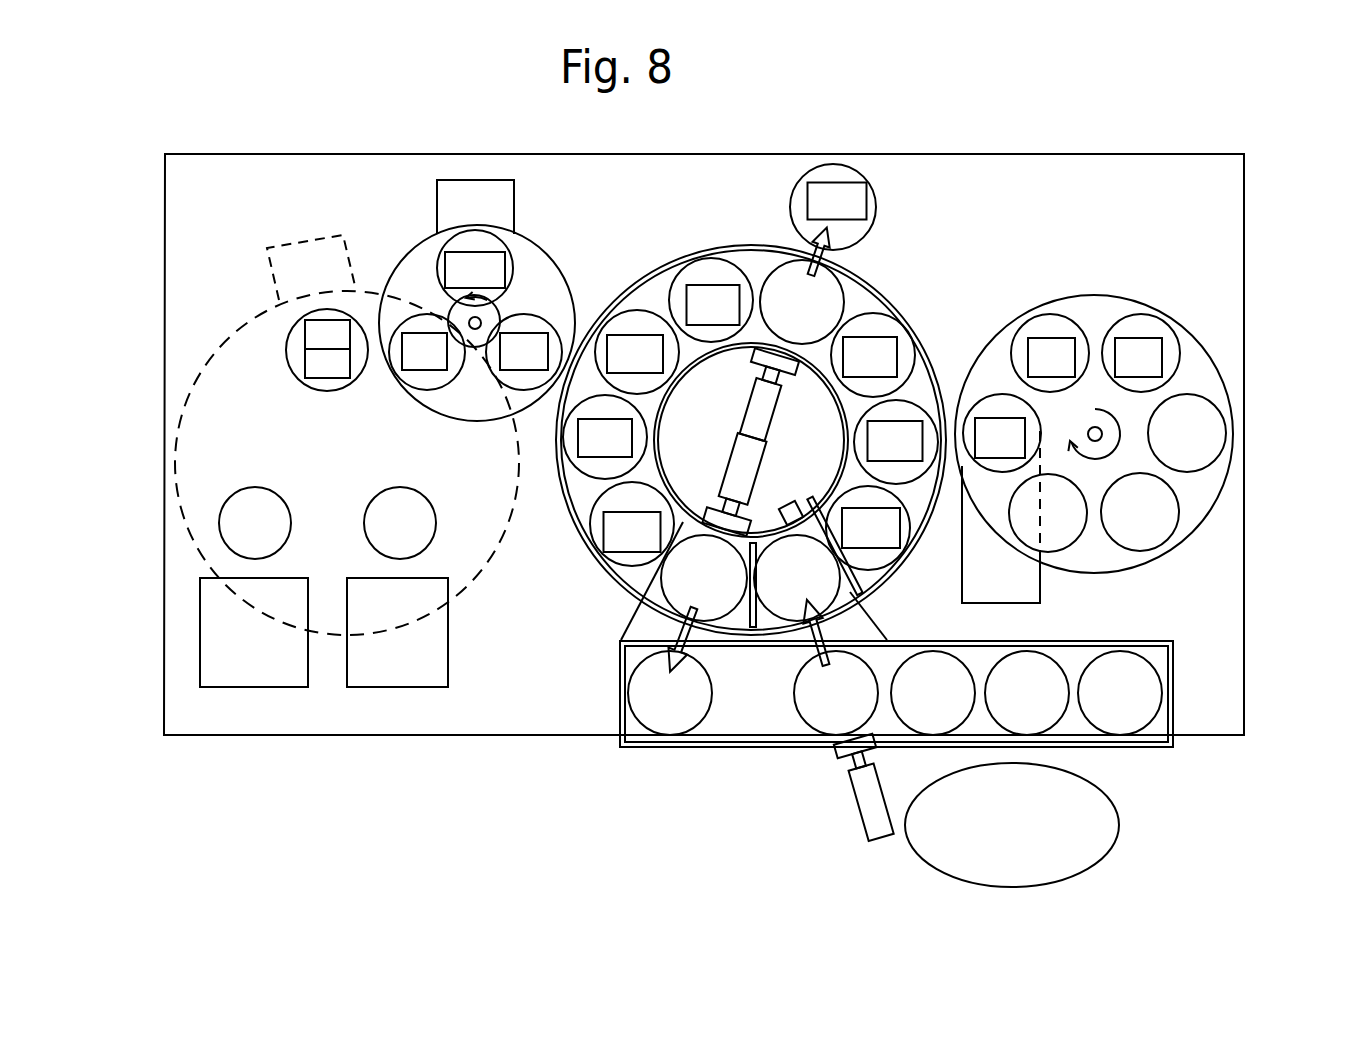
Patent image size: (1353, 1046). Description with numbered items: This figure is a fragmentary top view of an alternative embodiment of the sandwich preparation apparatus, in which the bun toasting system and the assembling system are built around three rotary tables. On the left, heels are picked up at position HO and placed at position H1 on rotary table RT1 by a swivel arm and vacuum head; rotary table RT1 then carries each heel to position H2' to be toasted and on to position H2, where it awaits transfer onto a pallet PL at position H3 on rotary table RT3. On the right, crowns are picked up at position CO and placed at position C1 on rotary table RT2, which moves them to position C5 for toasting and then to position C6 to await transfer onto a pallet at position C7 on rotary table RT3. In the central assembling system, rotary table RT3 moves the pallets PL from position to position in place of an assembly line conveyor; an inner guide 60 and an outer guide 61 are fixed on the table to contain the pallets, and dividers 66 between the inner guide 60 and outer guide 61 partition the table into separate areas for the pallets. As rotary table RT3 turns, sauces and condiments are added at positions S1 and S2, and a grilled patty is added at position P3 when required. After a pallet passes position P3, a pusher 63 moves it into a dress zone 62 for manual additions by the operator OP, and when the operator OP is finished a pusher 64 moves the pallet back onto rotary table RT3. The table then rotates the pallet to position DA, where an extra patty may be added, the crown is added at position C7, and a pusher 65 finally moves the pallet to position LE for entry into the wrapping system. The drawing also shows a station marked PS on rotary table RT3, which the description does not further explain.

The rotary table RT1 is at (513, 266).
The rotary table RT2 is at (1145, 449).
The rotary table RT3 is at (757, 497).
The inner guide 60 is at (570, 520).
The outer guide 61 is at (622, 588).
The dress zone 62 is at (964, 732).
The pusher 63 is at (728, 480).
The pusher 64 is at (858, 803).
The pusher 65 is at (773, 407).
The dividers 66 is at (752, 624).
The pallet PL is at (678, 727).
The operator OP is at (1012, 825).
The position LE is at (833, 221).
The PS station PS is at (711, 300).
The position H3 is at (637, 352).
The position C7 is at (873, 355).
The position S1 is at (605, 437).
The position S2 is at (896, 442).
The position P3 is at (632, 524).
The position DA is at (868, 528).
The position H1 is at (427, 352).
The position H2 is at (524, 352).
The position H2' is at (475, 268).
The position H0 HO is at (327, 350).
The position C0 CO is at (327, 366).
The position C6 is at (1050, 353).
The position C1 is at (1141, 353).
The position C5 is at (1002, 433).